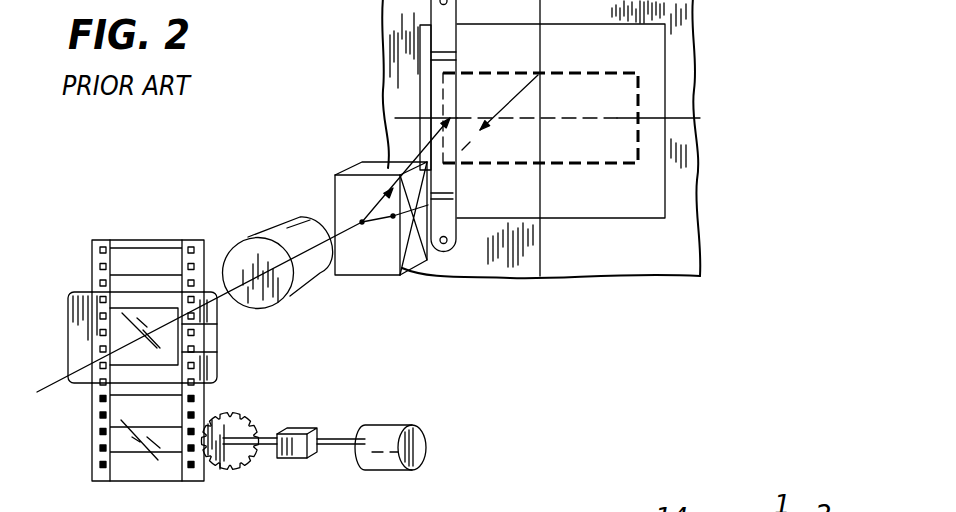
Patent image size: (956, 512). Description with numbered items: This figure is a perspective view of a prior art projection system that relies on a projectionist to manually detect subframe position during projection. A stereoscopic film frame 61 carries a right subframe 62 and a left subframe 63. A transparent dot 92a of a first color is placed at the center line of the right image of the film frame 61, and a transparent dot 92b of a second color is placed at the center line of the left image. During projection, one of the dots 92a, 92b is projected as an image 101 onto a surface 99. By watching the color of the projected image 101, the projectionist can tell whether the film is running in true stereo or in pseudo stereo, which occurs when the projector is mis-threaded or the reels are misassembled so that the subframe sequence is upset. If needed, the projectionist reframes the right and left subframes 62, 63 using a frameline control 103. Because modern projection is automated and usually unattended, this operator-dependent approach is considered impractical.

The stereoscopic film frame 61 is at (110, 332).
The right subframe 62 is at (157, 318).
The left subframe 63 is at (160, 372).
The transparent dot 92a is at (217, 324).
The transparent dot 92b is at (217, 352).
The surface 99 is at (428, 41).
The projected image 101 is at (446, 117).
The frameline control 103 is at (244, 473).